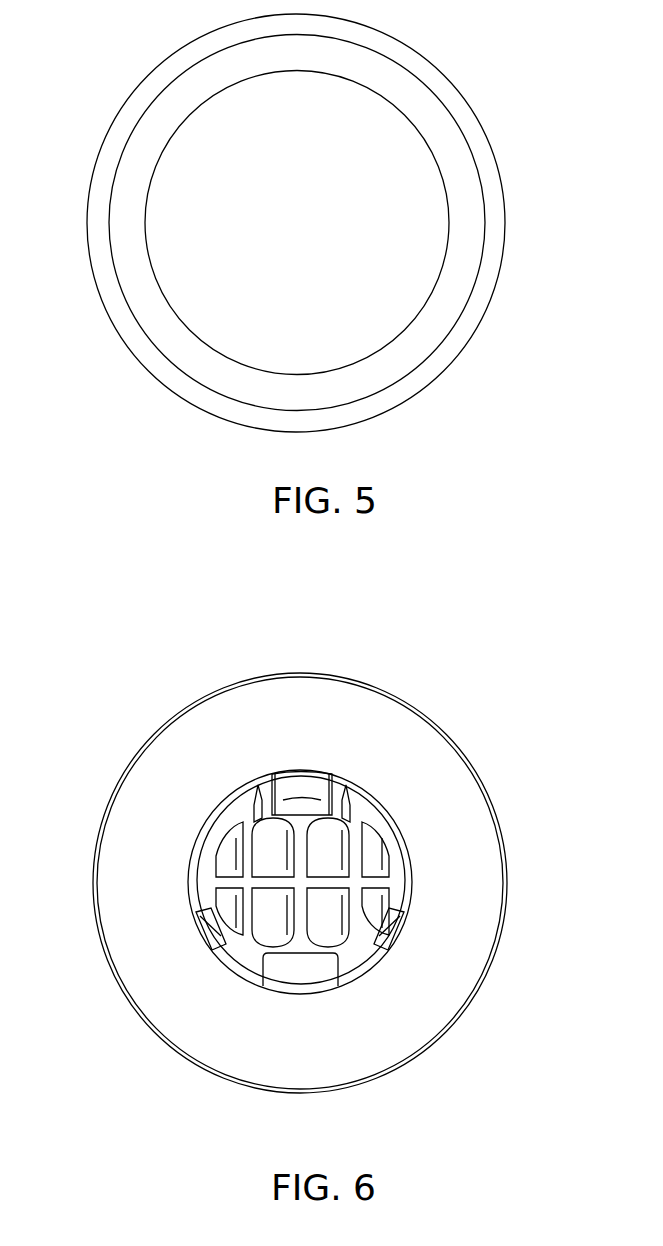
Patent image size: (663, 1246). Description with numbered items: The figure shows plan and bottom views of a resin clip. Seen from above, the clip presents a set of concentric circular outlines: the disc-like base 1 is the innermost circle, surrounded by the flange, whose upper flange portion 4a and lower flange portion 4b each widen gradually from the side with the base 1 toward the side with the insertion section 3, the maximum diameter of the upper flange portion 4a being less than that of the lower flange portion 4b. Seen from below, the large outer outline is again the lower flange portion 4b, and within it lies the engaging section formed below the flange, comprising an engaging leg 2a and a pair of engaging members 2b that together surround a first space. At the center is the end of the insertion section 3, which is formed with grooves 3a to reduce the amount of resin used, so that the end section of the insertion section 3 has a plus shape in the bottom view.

In FIG. 5, the base 1 is at (420, 203).
In FIG. 5, the upper flange portion 4a is at (446, 148).
In FIG. 5, the lower flange portion 4b is at (447, 91).
In FIG. 6, the lower flange portion 4b is at (478, 845).
In FIG. 6, the engaging leg 2a is at (313, 783).
In FIG. 6, the engaging members 2b is at (203, 933).
In FIG. 6, the insertion section 3 is at (308, 844).
In FIG. 6, the grooves 3a is at (343, 847).